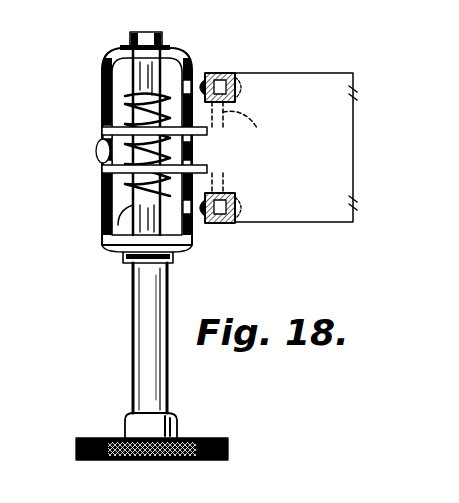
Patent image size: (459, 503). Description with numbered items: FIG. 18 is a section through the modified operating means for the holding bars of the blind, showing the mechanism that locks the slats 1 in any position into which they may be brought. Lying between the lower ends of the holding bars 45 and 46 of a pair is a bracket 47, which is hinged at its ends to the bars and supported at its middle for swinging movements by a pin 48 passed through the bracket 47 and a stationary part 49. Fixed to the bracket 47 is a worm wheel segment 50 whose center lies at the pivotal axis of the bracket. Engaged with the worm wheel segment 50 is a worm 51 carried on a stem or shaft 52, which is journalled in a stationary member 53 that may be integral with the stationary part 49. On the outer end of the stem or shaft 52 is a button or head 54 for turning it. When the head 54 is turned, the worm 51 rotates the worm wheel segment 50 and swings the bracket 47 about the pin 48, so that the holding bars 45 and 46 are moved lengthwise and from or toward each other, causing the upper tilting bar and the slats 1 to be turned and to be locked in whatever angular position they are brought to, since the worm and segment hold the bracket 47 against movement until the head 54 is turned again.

The slat 1 is at (312, 96).
The holding bar 45 is at (214, 73).
The holding bar 46 is at (210, 224).
The bracket 47 is at (210, 148).
The pin 48 is at (98, 152).
The stationary part 49 is at (105, 173).
The worm wheel segment 50 is at (122, 198).
The worm 51 is at (122, 236).
The stem or shaft 52 is at (150, 321).
The stationary member 53 is at (190, 252).
The button or head 54 is at (228, 448).